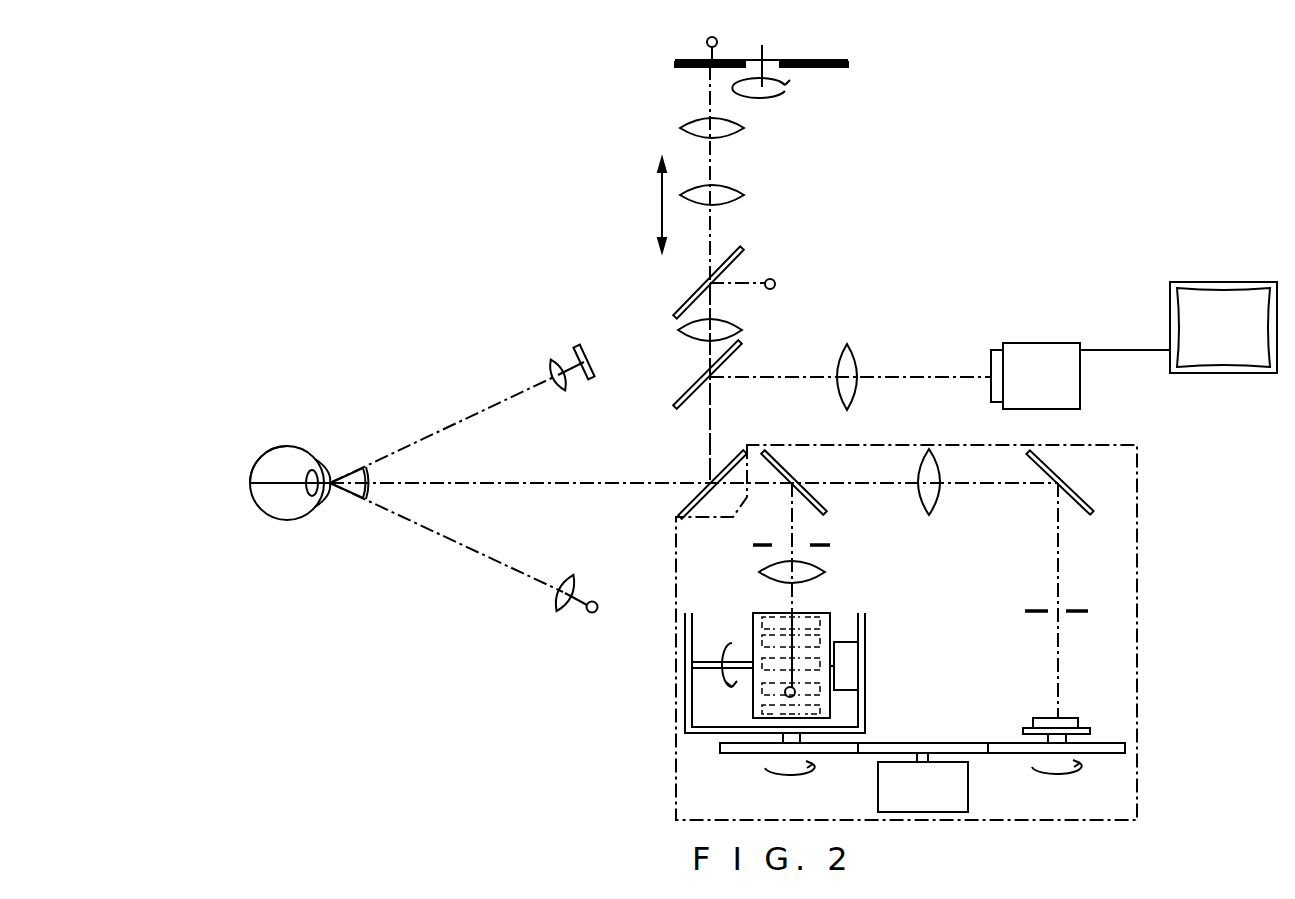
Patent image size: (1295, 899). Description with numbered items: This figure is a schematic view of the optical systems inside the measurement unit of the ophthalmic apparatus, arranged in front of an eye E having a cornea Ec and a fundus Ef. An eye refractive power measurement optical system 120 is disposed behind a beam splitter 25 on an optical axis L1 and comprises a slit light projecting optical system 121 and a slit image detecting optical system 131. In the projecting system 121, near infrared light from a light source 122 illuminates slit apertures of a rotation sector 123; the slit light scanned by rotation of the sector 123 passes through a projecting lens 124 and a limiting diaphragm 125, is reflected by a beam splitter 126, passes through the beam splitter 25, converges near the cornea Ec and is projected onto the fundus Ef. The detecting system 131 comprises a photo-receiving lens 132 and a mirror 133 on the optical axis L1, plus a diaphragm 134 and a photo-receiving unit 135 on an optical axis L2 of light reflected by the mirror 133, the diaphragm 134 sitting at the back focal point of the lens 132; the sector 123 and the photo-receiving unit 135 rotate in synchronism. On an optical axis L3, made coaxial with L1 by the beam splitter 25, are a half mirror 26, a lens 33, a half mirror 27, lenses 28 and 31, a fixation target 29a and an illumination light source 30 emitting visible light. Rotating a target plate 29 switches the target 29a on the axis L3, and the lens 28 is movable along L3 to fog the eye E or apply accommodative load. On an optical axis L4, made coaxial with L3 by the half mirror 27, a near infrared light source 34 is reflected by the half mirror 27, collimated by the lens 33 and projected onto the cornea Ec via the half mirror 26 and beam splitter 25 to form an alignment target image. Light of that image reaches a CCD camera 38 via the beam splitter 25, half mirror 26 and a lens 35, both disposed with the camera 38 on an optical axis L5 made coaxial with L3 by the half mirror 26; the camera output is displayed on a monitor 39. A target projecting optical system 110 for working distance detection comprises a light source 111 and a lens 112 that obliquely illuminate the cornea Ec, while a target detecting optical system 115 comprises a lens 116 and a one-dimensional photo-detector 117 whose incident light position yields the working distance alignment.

The eye to be examined E is at (283, 462).
The fundus Ef is at (255, 506).
The cornea Ec is at (328, 496).
The target projecting optical system for working distance detection 110 is at (571, 668).
The light source 111 is at (600, 634).
The lens 112 is at (558, 610).
The target detecting optical system for working distance detection 115 is at (559, 291).
The lens 116 is at (549, 362).
The one-dimensional photo-detector 117 is at (559, 282).
The eye refractive power measurement optical system 120 is at (1141, 478).
The slit light projecting optical system 121 is at (781, 686).
The light source 122 is at (785, 697).
The rotation sector 123 is at (750, 700).
The projecting lens 124 is at (760, 580).
The limiting diaphragm 125 is at (752, 545).
The beam splitter 126 is at (826, 506).
The slit image detecting optical system 131 is at (1079, 590).
The photo-receiving lens 132 is at (938, 500).
The mirror 133 is at (1065, 482).
The diaphragm 134 is at (1090, 612).
The photo-receiving unit 135 is at (1072, 717).
The beam splitter 25 is at (728, 460).
The half mirror 26 is at (685, 393).
The half mirror 27 is at (686, 302).
The lens 28 is at (745, 195).
The target plate 29 is at (775, 55).
The fixation target 29a is at (690, 67).
The illumination light source 30 is at (706, 42).
The lens 31 is at (745, 128).
The lens 33 is at (742, 328).
The light source 34 is at (775, 288).
The lens 35 is at (850, 388).
The CCD camera 38 is at (1043, 350).
The monitor 39 is at (1188, 312).
The optical axis L1 is at (632, 488).
The optical axis L2 is at (1061, 562).
The optical axis L3 is at (710, 430).
The optical axis L4 is at (742, 283).
The optical axis L5 is at (925, 376).